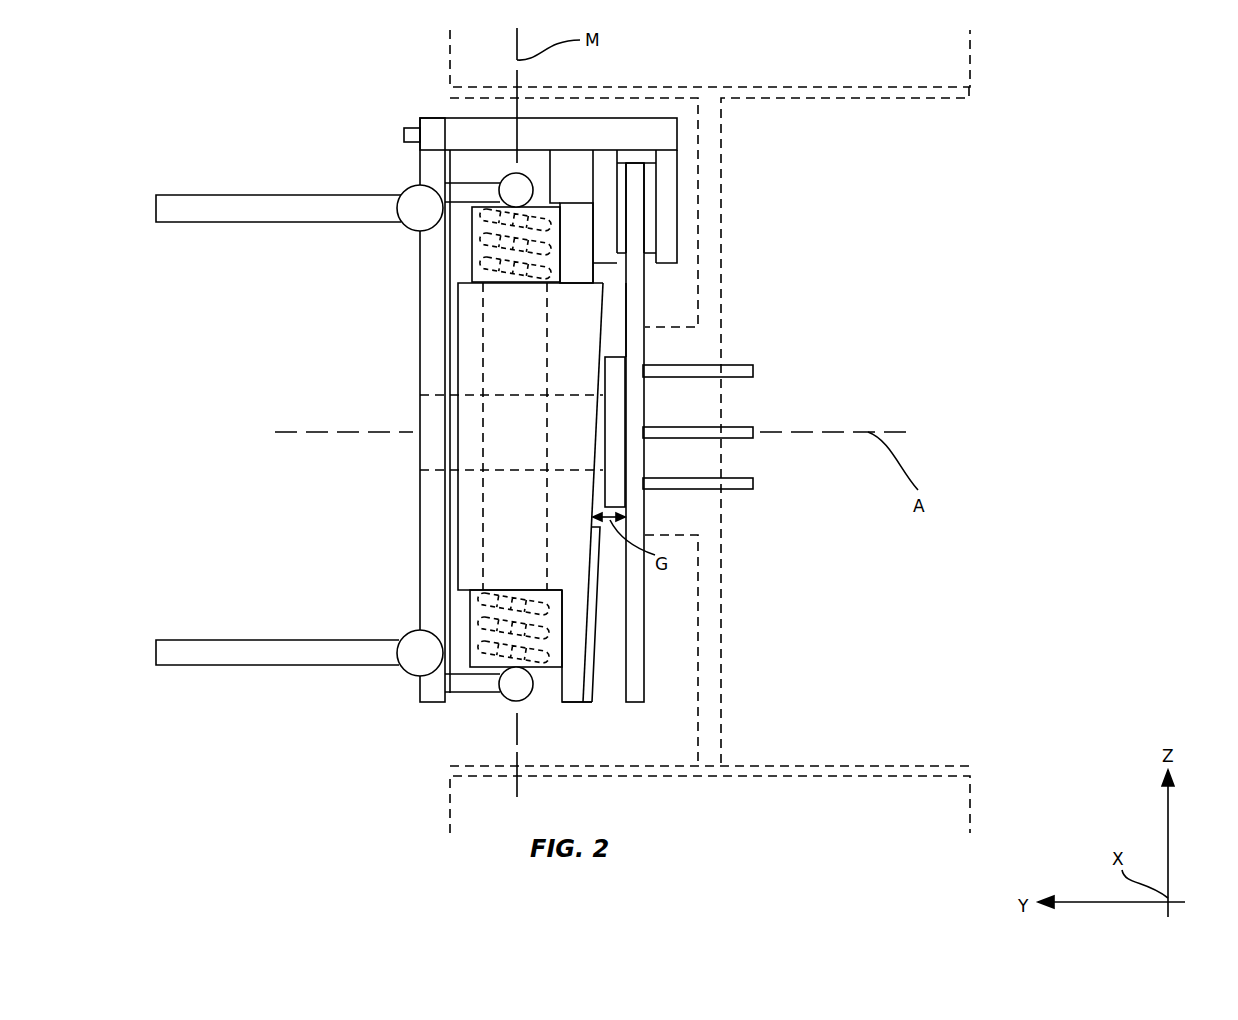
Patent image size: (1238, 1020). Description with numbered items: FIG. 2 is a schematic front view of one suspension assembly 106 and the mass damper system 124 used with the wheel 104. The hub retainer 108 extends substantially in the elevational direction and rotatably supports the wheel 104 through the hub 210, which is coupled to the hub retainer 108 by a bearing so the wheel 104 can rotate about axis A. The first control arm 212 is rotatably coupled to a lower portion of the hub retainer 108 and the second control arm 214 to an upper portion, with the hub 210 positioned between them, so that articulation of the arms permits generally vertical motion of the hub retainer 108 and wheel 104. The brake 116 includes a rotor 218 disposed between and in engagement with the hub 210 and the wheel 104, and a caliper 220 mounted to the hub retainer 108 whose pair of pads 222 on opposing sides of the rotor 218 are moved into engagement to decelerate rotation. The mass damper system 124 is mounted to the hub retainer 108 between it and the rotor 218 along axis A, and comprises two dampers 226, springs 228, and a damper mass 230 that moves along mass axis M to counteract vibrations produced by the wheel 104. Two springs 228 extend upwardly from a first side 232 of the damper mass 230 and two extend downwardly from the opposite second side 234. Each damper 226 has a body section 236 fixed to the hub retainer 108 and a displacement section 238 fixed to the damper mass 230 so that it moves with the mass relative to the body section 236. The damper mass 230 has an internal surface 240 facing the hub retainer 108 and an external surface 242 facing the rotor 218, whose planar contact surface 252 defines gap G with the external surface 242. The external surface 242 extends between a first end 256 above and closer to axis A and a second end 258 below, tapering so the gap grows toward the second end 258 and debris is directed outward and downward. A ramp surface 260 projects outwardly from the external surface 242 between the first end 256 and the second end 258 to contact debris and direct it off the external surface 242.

The wheel 104 is at (897, 98).
The suspension assembly 106 is at (157, 195).
The hub retainer 108 is at (420, 300).
The brake 116 is at (677, 135).
The mass damper system 124 is at (458, 350).
The hub 210 is at (605, 365).
The first control arm 212 is at (160, 665).
The second control arm 214 is at (160, 222).
The rotor 218 is at (645, 302).
The caliper 220 is at (677, 225).
The pads 222 is at (618, 253).
The damper 226 is at (480, 257).
The spring 228 is at (557, 220).
The damper mass 230 is at (458, 555).
The first side 232 is at (530, 275).
The second side 234 is at (530, 667).
The body section 236 is at (480, 228).
The displacement section 238 is at (483, 322).
The internal surface 240 is at (458, 455).
The external surface 242 is at (590, 578).
The contact surface 252 is at (625, 318).
The first end 256 is at (582, 282).
The second end 258 is at (570, 705).
The ramp surface 260 is at (595, 633).